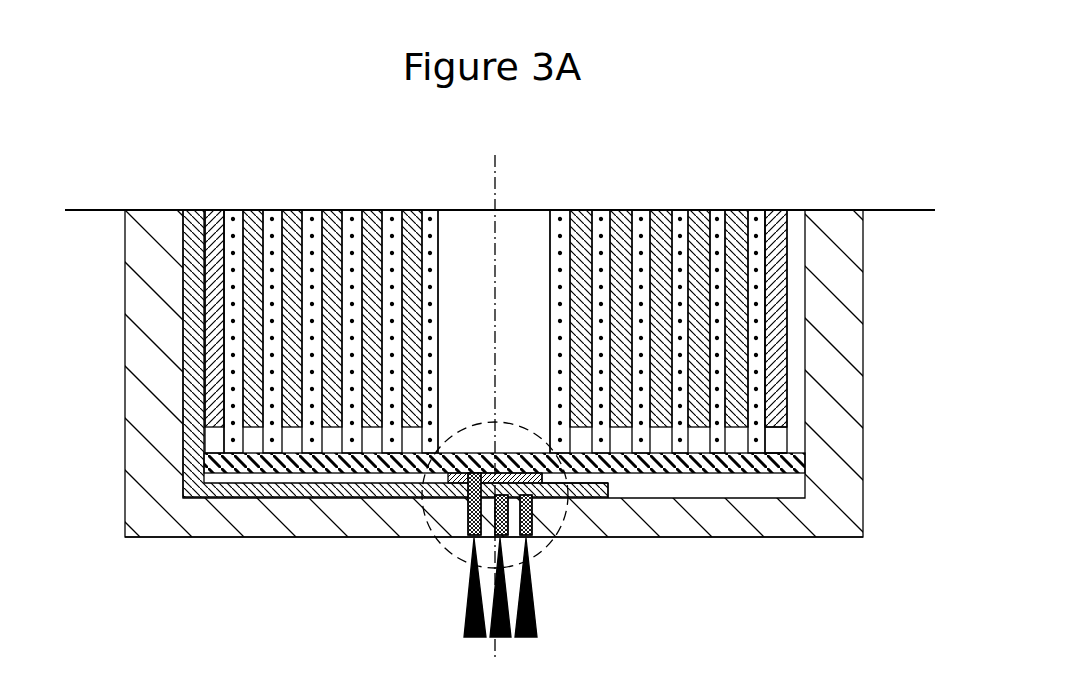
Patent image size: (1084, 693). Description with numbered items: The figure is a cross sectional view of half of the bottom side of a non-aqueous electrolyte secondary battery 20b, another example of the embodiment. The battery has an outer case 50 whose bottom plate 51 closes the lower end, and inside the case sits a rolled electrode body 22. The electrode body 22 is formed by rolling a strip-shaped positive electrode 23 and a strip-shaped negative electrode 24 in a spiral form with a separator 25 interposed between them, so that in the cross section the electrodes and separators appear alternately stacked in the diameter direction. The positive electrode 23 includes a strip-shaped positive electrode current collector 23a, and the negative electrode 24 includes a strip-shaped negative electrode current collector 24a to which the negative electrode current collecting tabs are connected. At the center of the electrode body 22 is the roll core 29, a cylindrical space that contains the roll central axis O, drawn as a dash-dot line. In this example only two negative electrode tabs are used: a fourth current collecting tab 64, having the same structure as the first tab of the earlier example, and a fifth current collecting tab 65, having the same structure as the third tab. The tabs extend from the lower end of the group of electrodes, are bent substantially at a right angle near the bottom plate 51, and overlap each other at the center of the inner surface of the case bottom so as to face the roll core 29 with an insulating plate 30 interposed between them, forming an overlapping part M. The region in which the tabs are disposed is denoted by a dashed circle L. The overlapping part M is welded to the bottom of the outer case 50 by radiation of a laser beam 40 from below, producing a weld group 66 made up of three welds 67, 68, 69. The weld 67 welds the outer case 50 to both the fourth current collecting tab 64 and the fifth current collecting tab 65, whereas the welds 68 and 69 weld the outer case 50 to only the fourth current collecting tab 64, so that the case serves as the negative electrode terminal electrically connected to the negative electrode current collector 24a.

The secondary battery 20b is at (824, 157).
The rolled electrode body 22 is at (566, 360).
The positive electrode 23 is at (745, 218).
The positive electrode current collector 23a is at (748, 241).
The negative electrode 24 is at (783, 218).
The negative electrode current collector 24a is at (773, 432).
The separator 25 is at (715, 222).
The roll core 29 is at (468, 233).
The insulating plate 30 is at (262, 474).
The laser beam 40 is at (538, 617).
The outer case 50 is at (866, 325).
The bottom plate 51 is at (312, 522).
The fourth current collecting tab 64 is at (212, 499).
The fifth current collecting tab 65 is at (541, 475).
The weld group 66 is at (577, 497).
The weld 67 is at (466, 502).
The weld 68 is at (535, 512).
The weld 69 is at (494, 530).
The dashed circle L is at (468, 420).
The overlapping part M is at (609, 490).
The roll central axis O is at (497, 250).